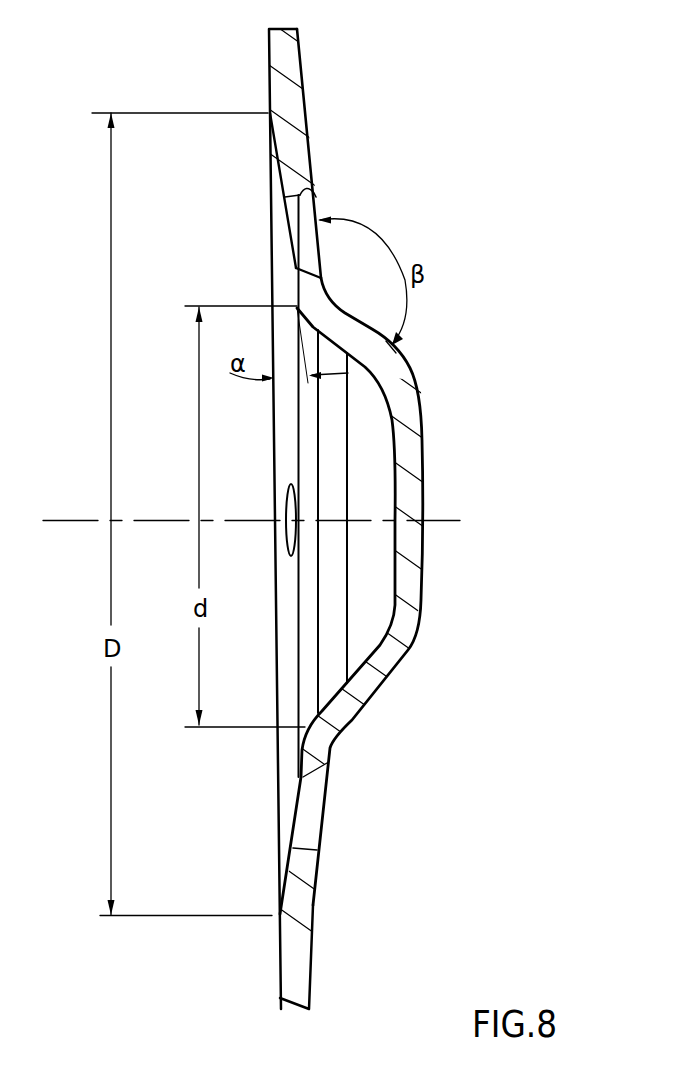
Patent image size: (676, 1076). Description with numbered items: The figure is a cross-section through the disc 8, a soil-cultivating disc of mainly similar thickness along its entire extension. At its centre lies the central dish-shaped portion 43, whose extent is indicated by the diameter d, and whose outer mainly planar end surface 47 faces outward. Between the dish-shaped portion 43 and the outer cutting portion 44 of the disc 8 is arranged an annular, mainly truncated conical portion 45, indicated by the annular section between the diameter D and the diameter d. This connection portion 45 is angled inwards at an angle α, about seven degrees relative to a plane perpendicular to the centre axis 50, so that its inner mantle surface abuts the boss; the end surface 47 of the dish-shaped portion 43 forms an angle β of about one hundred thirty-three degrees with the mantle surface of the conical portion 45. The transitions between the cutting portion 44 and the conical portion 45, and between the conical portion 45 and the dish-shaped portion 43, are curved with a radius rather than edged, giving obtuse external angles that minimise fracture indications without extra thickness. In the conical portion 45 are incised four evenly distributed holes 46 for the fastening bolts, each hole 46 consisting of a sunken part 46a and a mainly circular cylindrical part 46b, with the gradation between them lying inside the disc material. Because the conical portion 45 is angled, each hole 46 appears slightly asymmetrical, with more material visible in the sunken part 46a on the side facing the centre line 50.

The disc 8 is at (440, 380).
The central dish-shaped portion 43 is at (415, 545).
The outer cutting portion 44 is at (298, 943).
The annular truncated conical portion 45 is at (292, 105).
The hole 46 is at (322, 836).
The sunken part 46a is at (313, 201).
The circular cylindrical part 46b is at (287, 199).
The outer planar end surface 47 is at (363, 703).
The centre axis 50 is at (63, 521).